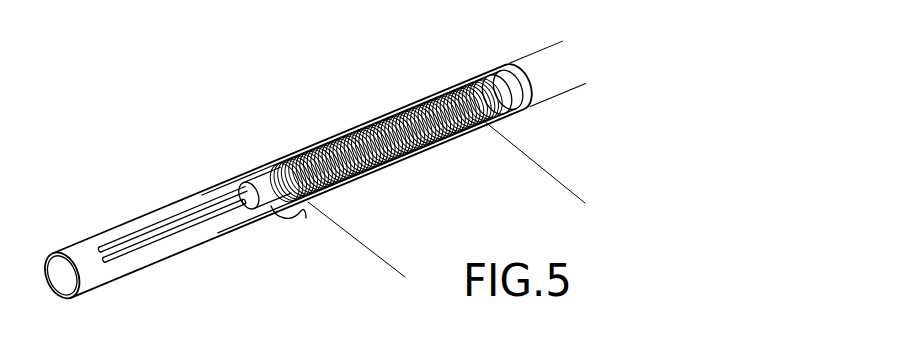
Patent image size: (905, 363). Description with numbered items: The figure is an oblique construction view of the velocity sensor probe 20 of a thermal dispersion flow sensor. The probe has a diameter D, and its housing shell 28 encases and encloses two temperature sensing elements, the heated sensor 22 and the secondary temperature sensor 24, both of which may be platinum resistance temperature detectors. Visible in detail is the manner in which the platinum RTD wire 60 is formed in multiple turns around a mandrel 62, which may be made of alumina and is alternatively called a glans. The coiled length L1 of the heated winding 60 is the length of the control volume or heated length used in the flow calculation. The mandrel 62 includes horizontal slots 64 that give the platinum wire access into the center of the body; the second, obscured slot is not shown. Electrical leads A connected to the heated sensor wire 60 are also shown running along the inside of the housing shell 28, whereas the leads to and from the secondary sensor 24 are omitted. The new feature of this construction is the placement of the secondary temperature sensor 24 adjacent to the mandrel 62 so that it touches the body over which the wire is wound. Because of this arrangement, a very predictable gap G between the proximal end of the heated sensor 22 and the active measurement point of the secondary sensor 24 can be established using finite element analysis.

The velocity sensor probe 20 is at (181, 90).
The heated sensor 22 is at (382, 172).
The secondary temperature sensor 24 is at (261, 221).
The housing shell 28 is at (180, 253).
The platinum RTD wire 60 is at (392, 124).
The mandrel 62 is at (478, 87).
The horizontal slots 64 is at (252, 155).
The electrical leads A is at (118, 256).
The gap G is at (294, 224).
The diameter D is at (507, 10).
The coiled length L1 is at (400, 258).